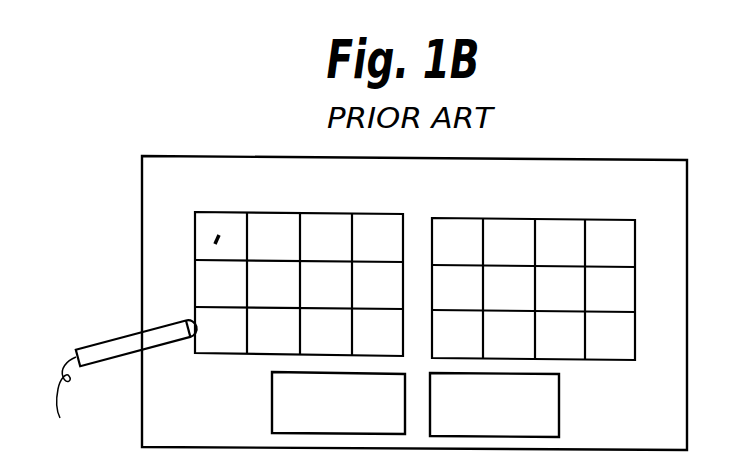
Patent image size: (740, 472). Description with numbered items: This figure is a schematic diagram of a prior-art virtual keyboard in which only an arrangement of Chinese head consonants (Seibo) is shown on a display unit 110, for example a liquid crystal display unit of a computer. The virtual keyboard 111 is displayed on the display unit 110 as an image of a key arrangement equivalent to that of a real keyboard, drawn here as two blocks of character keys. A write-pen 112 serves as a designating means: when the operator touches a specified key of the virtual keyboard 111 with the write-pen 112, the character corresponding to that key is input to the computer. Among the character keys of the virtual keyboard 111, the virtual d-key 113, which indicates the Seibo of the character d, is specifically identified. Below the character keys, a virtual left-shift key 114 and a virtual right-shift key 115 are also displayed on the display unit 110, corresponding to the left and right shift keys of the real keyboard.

The display unit 110 is at (185, 158).
The virtual keyboard 111 is at (213, 216).
The write-pen 112 is at (92, 342).
The virtual d-key 113 is at (406, 274).
The virtual left-shift key 114 is at (273, 402).
The virtual right-shift key 115 is at (559, 400).